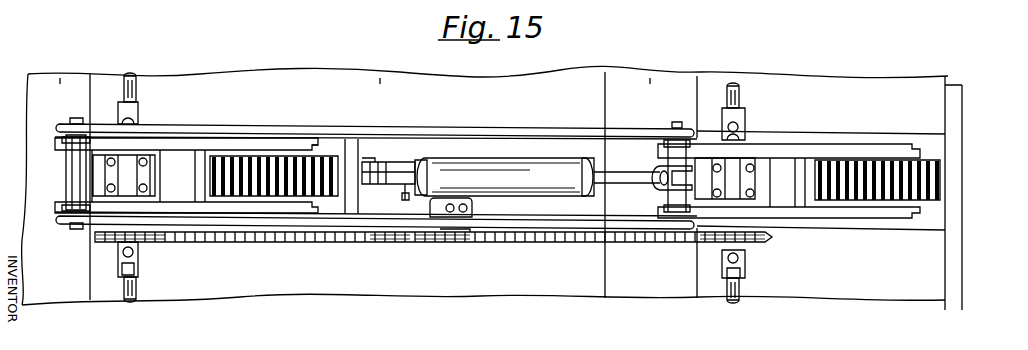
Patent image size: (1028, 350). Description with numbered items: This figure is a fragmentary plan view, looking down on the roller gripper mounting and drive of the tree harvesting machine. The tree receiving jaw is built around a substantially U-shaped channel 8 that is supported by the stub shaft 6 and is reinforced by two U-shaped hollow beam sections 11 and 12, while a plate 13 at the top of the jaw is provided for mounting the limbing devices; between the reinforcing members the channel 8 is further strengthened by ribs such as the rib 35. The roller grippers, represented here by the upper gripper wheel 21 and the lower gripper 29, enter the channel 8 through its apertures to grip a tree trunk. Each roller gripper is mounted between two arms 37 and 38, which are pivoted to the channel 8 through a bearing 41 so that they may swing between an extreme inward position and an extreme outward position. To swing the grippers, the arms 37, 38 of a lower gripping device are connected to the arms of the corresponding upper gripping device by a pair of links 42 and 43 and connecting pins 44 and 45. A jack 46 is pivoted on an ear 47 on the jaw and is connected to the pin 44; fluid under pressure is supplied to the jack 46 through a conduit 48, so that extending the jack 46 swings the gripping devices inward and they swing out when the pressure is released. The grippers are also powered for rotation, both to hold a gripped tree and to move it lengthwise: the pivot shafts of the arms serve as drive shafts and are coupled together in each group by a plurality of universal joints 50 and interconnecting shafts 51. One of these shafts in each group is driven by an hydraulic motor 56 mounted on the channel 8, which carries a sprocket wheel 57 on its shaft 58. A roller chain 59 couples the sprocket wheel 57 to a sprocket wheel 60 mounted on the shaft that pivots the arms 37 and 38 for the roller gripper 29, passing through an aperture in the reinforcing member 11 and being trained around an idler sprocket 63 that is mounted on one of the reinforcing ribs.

The stub shaft 6 is at (811, 233).
The U-shaped channel 8 is at (397, 113).
The U-shaped hollow beam section 11 is at (639, 110).
The U-shaped hollow beam section 12 is at (43, 98).
The plate 13 is at (963, 200).
The gripper wheel 21 is at (942, 172).
The lower gripper 29 is at (318, 147).
The rib 35 is at (287, 126).
The arm 37 is at (257, 214).
The arm 38 is at (213, 140).
The bearing 41 is at (154, 179).
The link 42 is at (548, 230).
The link 43 is at (536, 128).
The connecting pin 44 is at (678, 124).
The connecting pin 45 is at (77, 119).
The jack 46 is at (538, 164).
The ear 47 is at (383, 170).
The conduit 48 is at (404, 200).
The universal joint 50 is at (140, 114).
The interconnecting shaft 51 is at (138, 91).
The hydraulic motor 56 is at (475, 213).
The sprocket wheel 57 is at (461, 240).
The motor shaft 58 is at (440, 238).
The roller chain 59 is at (345, 242).
The sprocket wheel 60 is at (95, 236).
The idler sprocket 63 is at (393, 242).